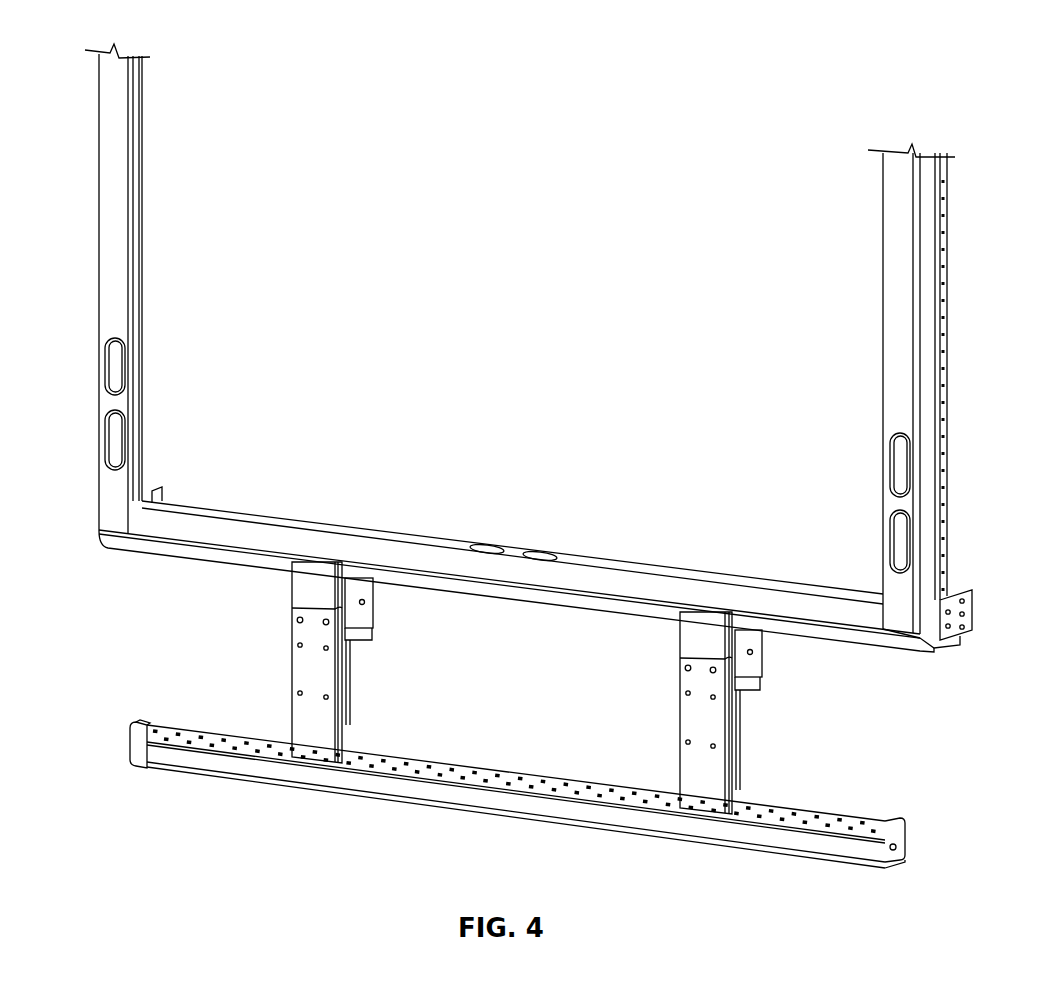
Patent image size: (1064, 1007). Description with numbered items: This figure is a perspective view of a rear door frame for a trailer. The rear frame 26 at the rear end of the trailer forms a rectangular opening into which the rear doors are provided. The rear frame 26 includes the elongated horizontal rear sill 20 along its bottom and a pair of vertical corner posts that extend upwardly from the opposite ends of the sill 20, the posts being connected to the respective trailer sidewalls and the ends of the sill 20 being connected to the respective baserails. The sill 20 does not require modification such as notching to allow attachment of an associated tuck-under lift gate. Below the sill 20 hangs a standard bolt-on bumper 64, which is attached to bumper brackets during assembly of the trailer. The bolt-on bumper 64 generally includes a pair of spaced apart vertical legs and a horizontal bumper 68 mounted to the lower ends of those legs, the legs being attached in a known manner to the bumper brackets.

The rear sill 20 is at (860, 612).
The rear frame 26 is at (960, 319).
The bolt-on bumper 64 is at (458, 824).
The horizontal bumper 68 is at (582, 812).